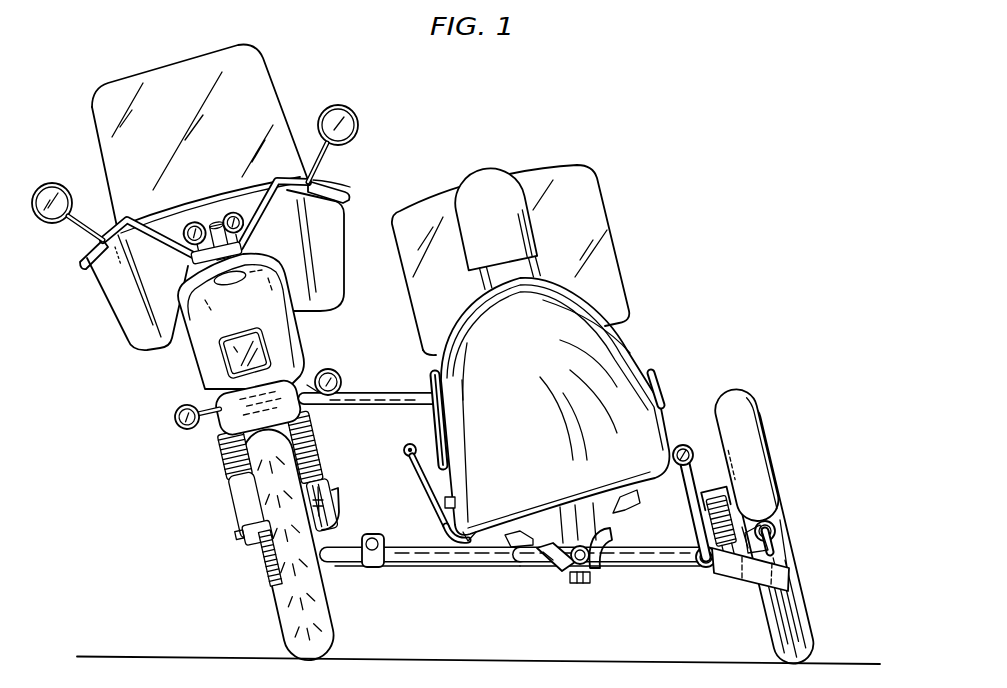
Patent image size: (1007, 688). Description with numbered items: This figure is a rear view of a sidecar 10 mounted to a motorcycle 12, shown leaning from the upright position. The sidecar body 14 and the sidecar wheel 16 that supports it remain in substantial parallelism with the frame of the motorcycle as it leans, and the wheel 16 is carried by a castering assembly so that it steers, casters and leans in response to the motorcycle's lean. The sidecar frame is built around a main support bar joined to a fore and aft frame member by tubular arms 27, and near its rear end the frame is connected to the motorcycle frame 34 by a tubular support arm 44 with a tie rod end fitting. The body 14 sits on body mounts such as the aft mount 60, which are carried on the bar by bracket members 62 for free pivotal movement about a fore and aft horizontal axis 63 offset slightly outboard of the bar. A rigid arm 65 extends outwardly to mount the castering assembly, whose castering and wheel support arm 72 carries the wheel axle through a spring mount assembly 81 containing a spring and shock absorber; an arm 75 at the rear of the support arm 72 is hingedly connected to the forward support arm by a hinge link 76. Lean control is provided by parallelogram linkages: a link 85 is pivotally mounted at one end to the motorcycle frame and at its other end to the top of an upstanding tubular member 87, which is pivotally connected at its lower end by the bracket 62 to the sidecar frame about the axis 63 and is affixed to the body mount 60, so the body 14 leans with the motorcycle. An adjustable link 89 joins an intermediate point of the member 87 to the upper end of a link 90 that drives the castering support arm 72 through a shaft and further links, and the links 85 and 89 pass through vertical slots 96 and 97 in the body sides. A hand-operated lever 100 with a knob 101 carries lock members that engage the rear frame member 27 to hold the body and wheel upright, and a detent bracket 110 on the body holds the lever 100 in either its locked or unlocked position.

The sidecar 10 is at (655, 345).
The motorcycle 12 is at (133, 382).
The sidecar body 14 is at (609, 348).
The sidecar wheel 16 is at (815, 605).
The tubular arms 27 is at (659, 569).
The motorcycle frame 34 is at (340, 500).
The tubular support arm 44 is at (433, 568).
The body mount 60 is at (515, 541).
The bracket members 62 is at (553, 563).
The horizontal axis 63 is at (593, 558).
The rigid arm 65 is at (757, 579).
The castering and wheel support arm 72 is at (728, 574).
The arm 75 is at (775, 558).
The hinge link 76 is at (777, 540).
The spring mount assembly 81 is at (711, 474).
The link 85 is at (371, 393).
The upstanding tubular member 87 is at (597, 541).
The link 89 is at (677, 446).
The link 90 is at (690, 507).
The vertical slot 96 is at (660, 388).
The vertical slot 97 is at (431, 382).
The hand-operated lever 100 is at (427, 488).
The knob 101 is at (406, 446).
The detent bracket 110 is at (440, 520).